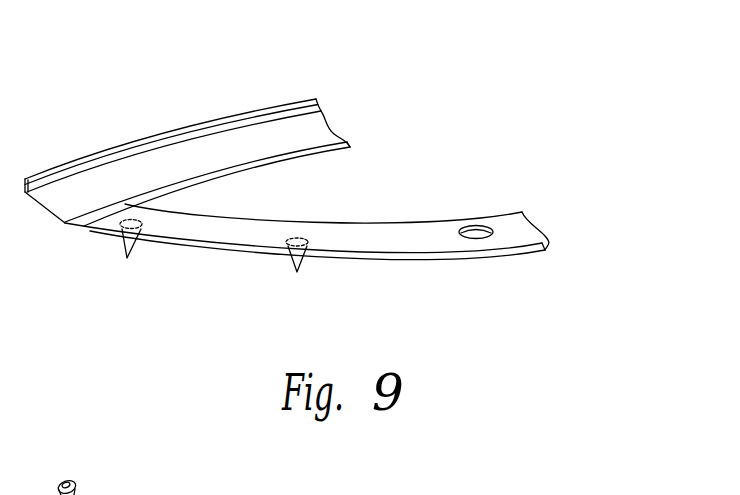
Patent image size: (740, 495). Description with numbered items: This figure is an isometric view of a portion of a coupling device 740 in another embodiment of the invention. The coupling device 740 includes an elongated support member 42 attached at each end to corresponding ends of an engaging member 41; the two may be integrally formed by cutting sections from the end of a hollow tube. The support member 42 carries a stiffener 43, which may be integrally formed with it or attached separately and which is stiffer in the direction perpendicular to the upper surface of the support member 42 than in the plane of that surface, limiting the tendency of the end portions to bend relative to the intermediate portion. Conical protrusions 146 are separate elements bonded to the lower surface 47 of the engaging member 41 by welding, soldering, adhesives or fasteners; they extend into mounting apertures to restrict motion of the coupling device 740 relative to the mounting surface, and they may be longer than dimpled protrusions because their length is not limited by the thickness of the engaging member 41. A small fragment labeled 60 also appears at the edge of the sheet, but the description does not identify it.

The coupling device 740 is at (224, 78).
The stiffener 43 is at (112, 149).
The support member 42 is at (323, 128).
The engaging member 41 is at (420, 282).
The lower surface 47 is at (475, 258).
The conical protrusions 146 is at (125, 258).
The fastener 60 is at (77, 490).